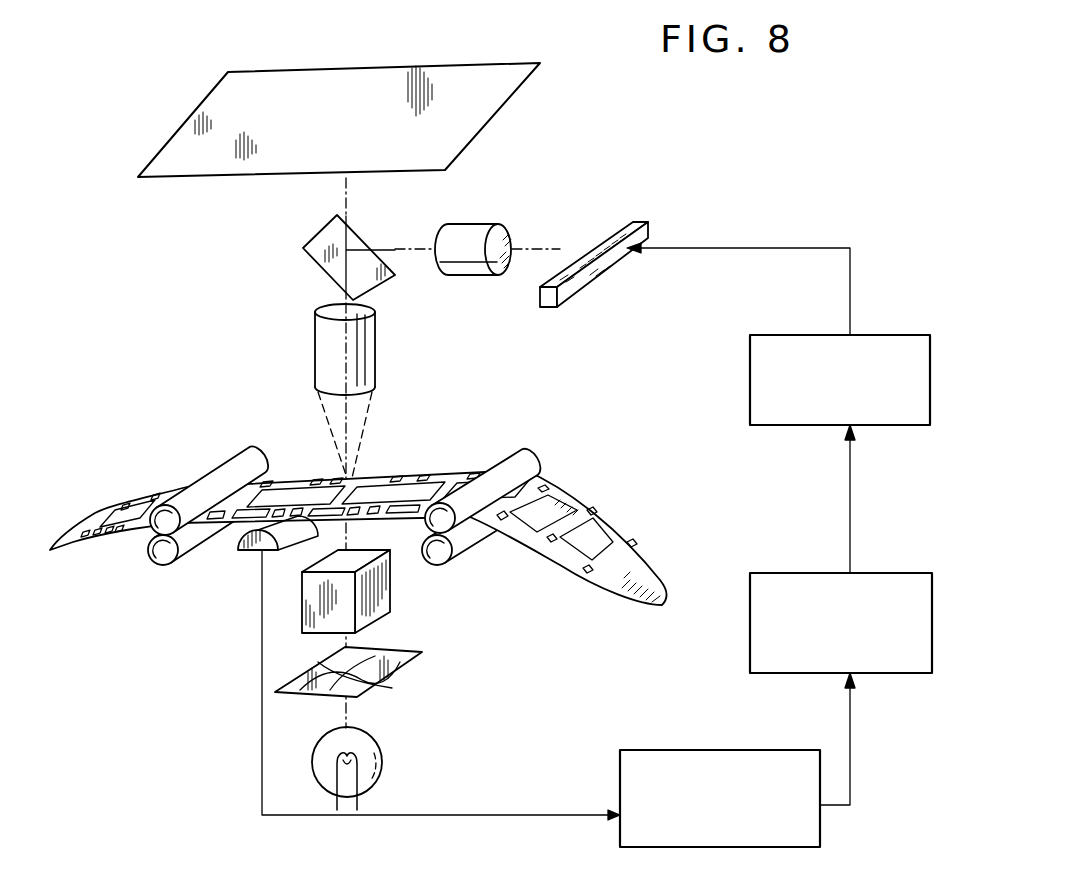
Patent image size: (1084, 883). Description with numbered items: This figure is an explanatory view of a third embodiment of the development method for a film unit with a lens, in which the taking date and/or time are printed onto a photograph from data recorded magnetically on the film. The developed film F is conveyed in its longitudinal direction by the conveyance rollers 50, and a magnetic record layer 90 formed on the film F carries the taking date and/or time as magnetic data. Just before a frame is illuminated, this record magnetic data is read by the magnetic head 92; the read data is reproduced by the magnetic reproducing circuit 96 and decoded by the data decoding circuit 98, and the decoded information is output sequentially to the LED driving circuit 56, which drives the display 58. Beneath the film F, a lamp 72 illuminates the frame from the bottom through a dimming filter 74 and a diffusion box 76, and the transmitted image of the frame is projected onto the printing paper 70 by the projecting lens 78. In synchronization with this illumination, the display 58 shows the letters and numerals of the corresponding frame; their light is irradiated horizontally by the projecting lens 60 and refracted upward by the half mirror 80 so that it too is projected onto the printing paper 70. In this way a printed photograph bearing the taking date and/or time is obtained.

The printing paper 70 is at (508, 104).
The half mirror 80 is at (318, 236).
The projecting lens 60 is at (470, 280).
The display 58 is at (615, 230).
The projecting lens 78 is at (378, 372).
The film F is at (358, 488).
The conveyance rollers 50 is at (358, 502).
The magnetic record layer 90 is at (233, 520).
The magnetic head 92 is at (243, 552).
The diffusion box 76 is at (392, 597).
The dimming filter 74 is at (392, 675).
The lamp 72 is at (382, 750).
The LED driving circuit 56 is at (817, 427).
The data decoding circuit 98 is at (750, 625).
The magnetic reproducing circuit 96 is at (662, 750).